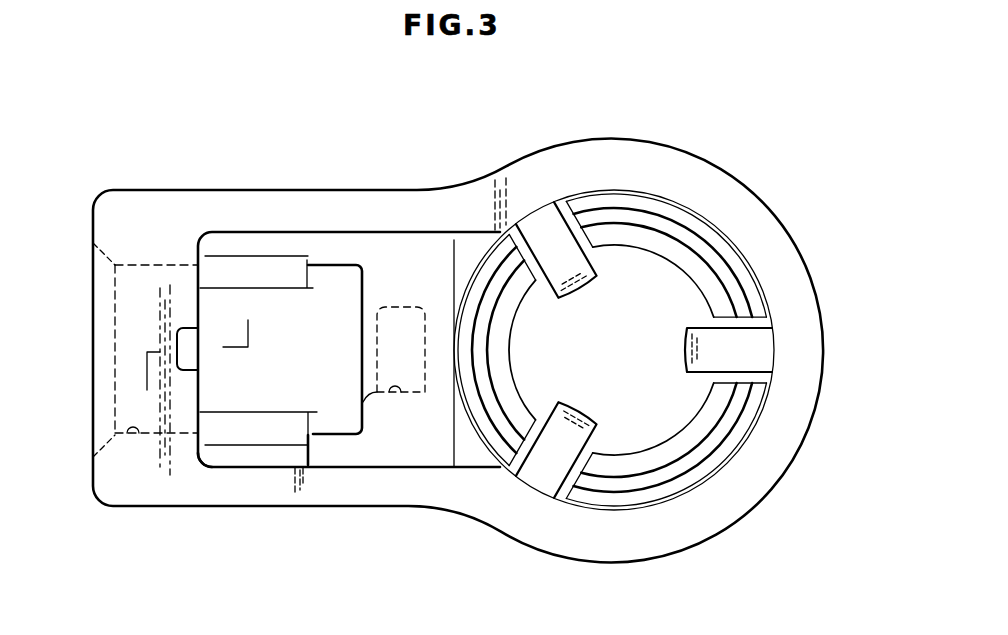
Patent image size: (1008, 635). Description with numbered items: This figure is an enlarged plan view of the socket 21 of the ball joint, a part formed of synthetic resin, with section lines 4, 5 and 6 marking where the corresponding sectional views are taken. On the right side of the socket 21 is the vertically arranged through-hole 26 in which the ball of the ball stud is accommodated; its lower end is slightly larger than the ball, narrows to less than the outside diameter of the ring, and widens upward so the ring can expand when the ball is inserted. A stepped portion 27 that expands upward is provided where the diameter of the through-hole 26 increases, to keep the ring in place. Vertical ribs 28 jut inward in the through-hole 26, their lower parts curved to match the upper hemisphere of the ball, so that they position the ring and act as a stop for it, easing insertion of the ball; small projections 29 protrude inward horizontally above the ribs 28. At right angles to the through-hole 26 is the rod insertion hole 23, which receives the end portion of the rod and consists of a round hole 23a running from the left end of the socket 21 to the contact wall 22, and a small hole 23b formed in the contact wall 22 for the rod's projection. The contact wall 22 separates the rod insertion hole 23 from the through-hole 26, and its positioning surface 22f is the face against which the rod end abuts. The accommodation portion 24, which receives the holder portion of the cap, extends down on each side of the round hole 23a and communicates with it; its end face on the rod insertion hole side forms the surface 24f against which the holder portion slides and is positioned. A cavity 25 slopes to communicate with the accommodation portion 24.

The socket 21 is at (723, 193).
The contact wall 22 is at (403, 263).
The positioning surface 22f is at (392, 395).
The rod insertion hole 23 is at (138, 392).
The round hole 23a is at (133, 433).
The small hole 23b is at (423, 393).
The accommodation portion 24 is at (276, 425).
The surface 24f is at (207, 459).
The cavity 25 is at (188, 340).
The through-hole 26 is at (663, 300).
The stepped portion 27 is at (662, 230).
The vertical ribs 28 is at (549, 232).
The small projections 29 is at (471, 278).
The section line 4— 4 is at (93, 350).
The section line 5— 5 is at (613, 130).
The section line 6— 6 is at (248, 187).